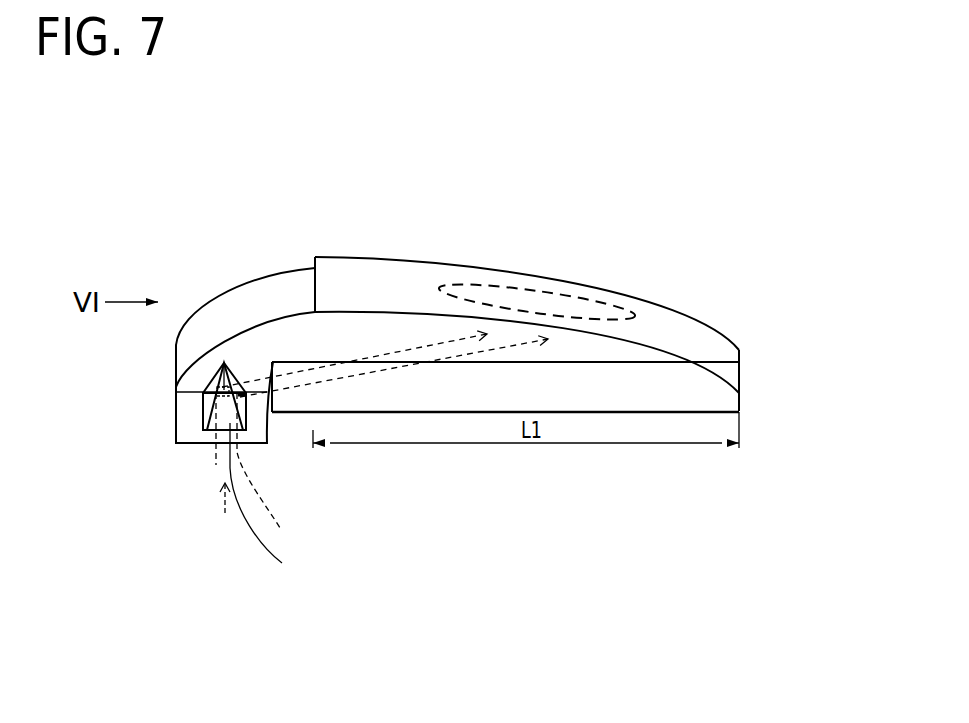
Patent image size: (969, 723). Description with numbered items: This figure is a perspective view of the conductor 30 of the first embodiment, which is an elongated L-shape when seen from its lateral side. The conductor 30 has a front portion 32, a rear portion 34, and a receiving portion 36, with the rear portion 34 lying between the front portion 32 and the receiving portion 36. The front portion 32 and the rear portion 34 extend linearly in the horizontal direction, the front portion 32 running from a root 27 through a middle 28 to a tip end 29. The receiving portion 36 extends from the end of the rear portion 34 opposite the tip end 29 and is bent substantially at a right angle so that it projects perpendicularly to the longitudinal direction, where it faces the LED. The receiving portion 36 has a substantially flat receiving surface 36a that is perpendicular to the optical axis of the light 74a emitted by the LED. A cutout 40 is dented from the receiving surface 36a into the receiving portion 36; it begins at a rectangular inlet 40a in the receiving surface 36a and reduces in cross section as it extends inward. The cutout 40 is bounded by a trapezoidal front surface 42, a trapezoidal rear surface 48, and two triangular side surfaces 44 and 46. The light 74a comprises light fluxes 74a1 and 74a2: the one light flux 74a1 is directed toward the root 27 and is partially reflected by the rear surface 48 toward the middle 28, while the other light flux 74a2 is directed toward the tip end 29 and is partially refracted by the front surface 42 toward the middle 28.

The root 27 is at (333, 267).
The middle 28 is at (563, 292).
The tip end 29 is at (727, 350).
The conductor 30 is at (487, 195).
The front portion 32 is at (558, 228).
The rear portion 34 is at (243, 203).
The receiving portion 36 is at (208, 536).
The receiving surface 36a is at (250, 443).
The cutout 40 is at (177, 346).
The inlet 40a is at (282, 563).
The front surface 42 is at (268, 436).
The side surface 44 is at (203, 418).
The side surface 46 is at (218, 388).
The rear surface 48 is at (203, 400).
The light 74a is at (225, 502).
The one light flux 74a1 is at (216, 458).
The other light flux 74a2 is at (280, 528).